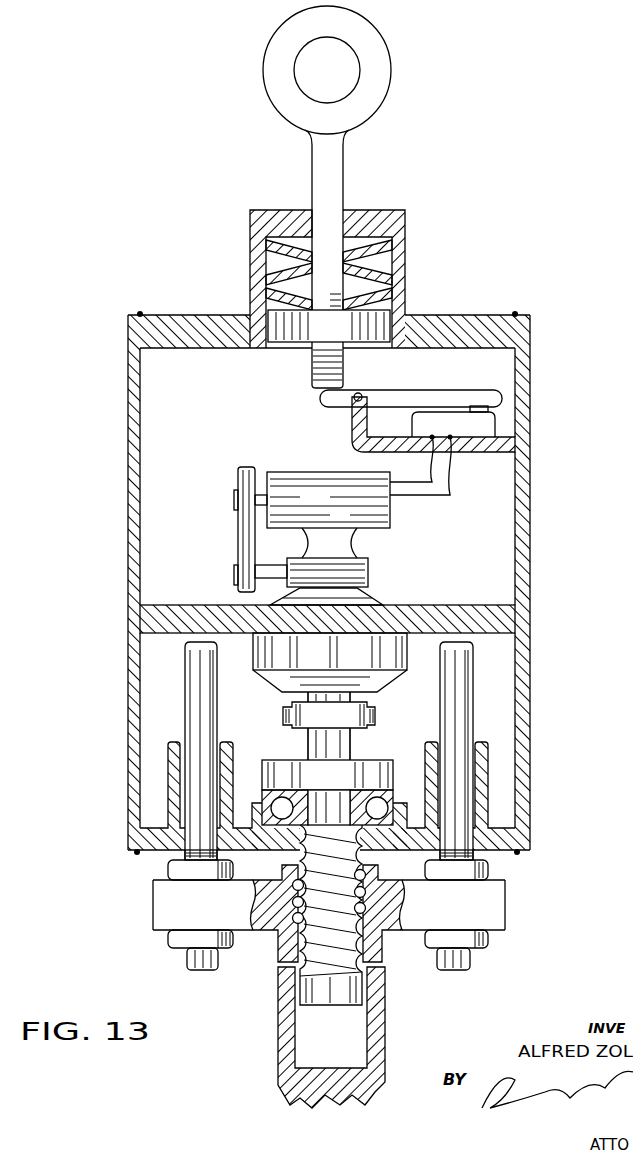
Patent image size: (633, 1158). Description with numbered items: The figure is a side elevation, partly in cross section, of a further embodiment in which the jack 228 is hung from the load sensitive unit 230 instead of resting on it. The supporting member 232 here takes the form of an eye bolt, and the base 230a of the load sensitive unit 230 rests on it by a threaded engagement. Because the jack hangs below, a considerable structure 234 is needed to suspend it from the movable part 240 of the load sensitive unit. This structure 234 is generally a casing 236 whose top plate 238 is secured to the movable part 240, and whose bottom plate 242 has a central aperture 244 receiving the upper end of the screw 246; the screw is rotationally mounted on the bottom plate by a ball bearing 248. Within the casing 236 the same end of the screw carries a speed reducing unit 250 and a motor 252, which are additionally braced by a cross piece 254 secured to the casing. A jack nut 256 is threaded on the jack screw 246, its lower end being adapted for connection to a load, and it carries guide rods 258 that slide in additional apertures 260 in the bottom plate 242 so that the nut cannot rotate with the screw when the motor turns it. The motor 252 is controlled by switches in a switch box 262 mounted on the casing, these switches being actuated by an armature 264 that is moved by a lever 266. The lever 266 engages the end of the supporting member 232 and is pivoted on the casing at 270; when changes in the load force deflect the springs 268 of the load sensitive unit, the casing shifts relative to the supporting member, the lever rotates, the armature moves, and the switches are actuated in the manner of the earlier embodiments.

The jack 228 is at (392, 856).
The load sensitive unit 230 is at (388, 236).
The base 230a is at (266, 317).
The supporting member 232 is at (332, 164).
The structure 234 is at (560, 496).
The casing 236 is at (521, 370).
The top plate 238 is at (489, 315).
The movable part 240 is at (398, 253).
The bottom plate 242 is at (157, 847).
The central aperture 244 is at (300, 850).
The screw 246 is at (304, 973).
The ball bearing 248 is at (402, 797).
The speed reducing unit 250 is at (372, 598).
The motor 252 is at (387, 513).
The cross piece 254 is at (173, 612).
The jack nut 256 is at (378, 1020).
The guide rods 258 is at (197, 693).
The additional apertures 260 is at (215, 763).
The switch box 262 is at (480, 431).
The armature 264 is at (490, 406).
The lever 266 is at (388, 396).
The springs 268 is at (387, 275).
The pivot 270 is at (350, 402).